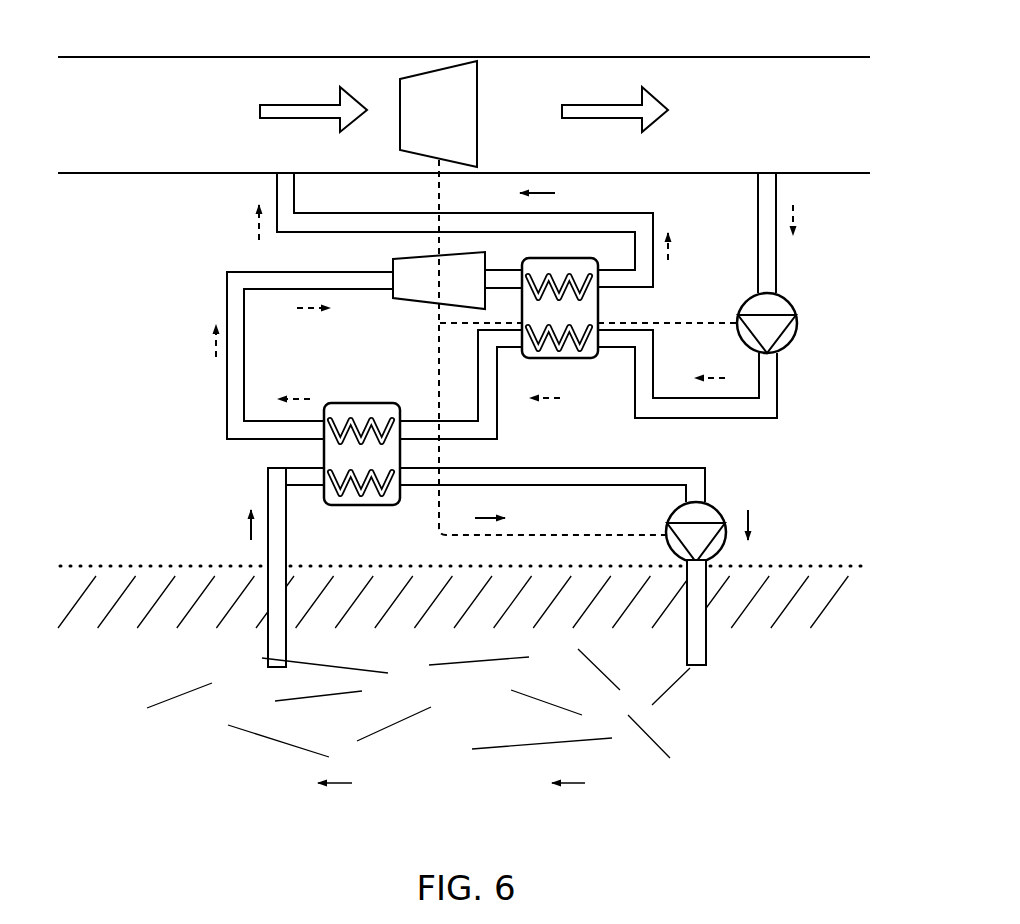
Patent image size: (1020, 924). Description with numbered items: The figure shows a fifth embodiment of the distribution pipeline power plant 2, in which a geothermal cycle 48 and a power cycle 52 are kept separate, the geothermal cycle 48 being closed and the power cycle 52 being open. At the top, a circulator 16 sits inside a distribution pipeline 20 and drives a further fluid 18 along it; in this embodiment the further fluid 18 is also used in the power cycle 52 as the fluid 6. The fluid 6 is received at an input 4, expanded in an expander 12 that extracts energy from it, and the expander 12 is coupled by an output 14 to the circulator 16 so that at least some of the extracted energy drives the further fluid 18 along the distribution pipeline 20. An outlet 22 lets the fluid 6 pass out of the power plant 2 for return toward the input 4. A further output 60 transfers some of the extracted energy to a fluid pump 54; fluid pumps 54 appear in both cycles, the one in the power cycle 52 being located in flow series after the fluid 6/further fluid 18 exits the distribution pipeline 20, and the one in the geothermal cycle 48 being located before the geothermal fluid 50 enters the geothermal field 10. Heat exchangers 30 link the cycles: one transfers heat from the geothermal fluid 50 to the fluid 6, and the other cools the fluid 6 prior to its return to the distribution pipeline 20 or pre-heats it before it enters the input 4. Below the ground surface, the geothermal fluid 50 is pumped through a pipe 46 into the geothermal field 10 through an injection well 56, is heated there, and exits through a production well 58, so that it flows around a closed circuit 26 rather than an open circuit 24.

The distribution pipeline power plant 2 is at (115, 298).
The input 4 is at (380, 290).
The fluid 6 is at (227, 277).
The geothermal field 10 is at (422, 760).
The expander 12 is at (410, 300).
The output 14 is at (439, 181).
The circulator 16 is at (478, 117).
The further fluid 18 is at (258, 108).
The distribution pipeline 20 is at (626, 57).
The outlet 22 is at (490, 262).
The open circuit 24 is at (155, 412).
The closed circuit 26 is at (797, 525).
The heat exchanger 30 is at (578, 358).
The pipe 46 is at (653, 215).
The geothermal cycle 48 is at (187, 718).
The geothermal fluid 50 is at (672, 718).
The power cycle 52 is at (213, 453).
The fluid pump 54 is at (795, 310).
The injection well 56 is at (665, 546).
The production well 58 is at (289, 566).
The further output 60 is at (447, 307).